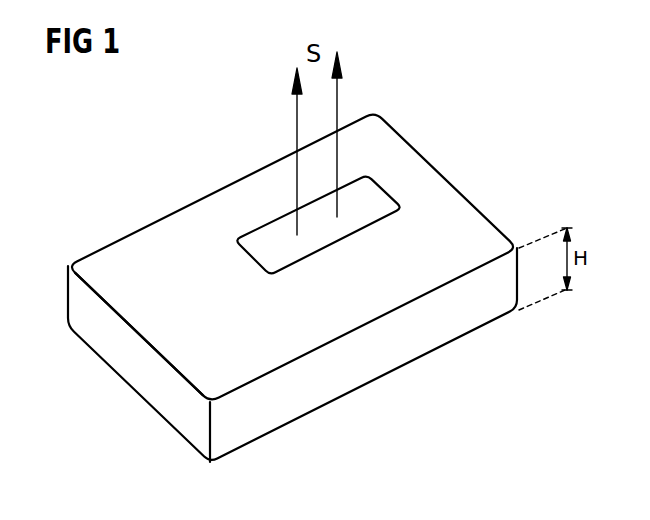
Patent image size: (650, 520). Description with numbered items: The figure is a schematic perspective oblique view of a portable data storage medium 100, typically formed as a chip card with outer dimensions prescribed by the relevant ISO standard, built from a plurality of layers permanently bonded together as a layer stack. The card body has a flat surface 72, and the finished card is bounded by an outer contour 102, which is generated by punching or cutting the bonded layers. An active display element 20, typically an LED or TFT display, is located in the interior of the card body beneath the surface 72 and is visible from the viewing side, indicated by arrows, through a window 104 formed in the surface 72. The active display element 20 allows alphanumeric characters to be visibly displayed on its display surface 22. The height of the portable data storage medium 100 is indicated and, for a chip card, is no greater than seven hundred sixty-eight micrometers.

The electronic device 100 is at (102, 175).
The top surface 104 is at (235, 217).
The housing 102 is at (372, 321).
The front side surface 72 is at (173, 338).
The label 22 is at (372, 190).
The display area with characters 20 is at (399, 198).